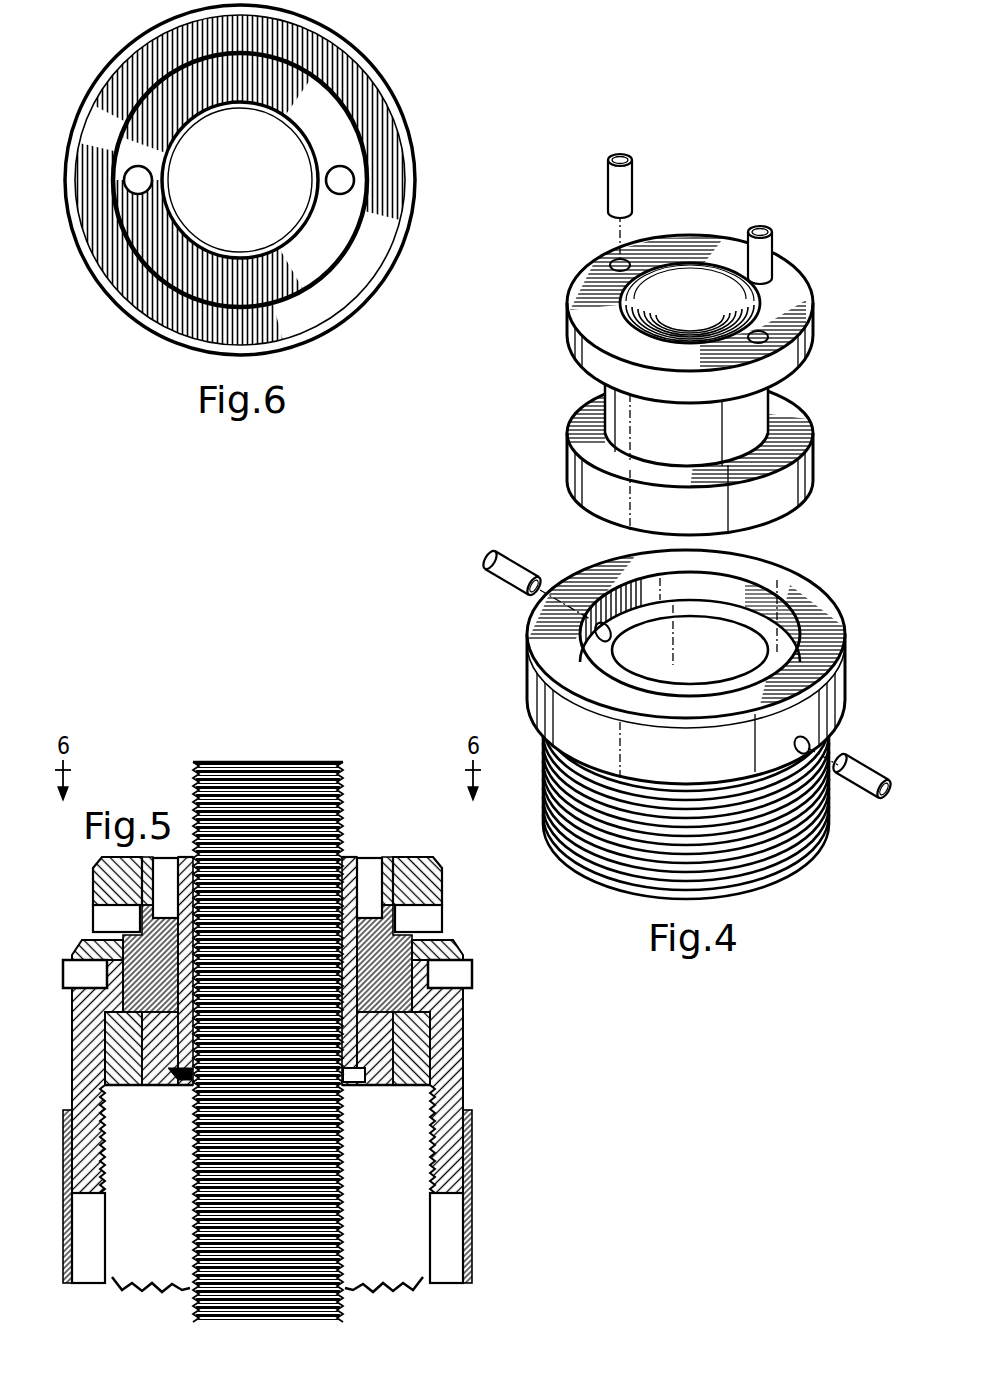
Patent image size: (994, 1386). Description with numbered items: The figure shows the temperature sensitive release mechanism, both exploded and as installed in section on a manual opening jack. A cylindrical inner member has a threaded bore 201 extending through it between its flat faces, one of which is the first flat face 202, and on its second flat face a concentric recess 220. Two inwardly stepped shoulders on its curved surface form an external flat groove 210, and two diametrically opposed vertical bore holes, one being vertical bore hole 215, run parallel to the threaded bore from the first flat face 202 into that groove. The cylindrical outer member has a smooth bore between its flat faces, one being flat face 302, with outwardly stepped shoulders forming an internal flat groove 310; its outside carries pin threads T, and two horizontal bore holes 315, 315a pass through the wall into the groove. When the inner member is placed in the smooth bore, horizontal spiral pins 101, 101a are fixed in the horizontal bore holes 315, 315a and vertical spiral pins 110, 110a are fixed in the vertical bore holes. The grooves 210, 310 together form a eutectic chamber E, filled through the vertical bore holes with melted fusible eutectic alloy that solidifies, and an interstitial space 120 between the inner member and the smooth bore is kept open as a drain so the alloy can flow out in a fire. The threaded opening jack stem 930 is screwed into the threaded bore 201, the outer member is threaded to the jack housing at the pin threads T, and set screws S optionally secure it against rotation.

In FIG. 4, the horizontal spiral pin 101 is at (846, 794).
In FIG. 4, the horizontal spiral pin 101a is at (495, 590).
In FIG. 6, the vertical spiral pin 110 is at (336, 176).
In FIG. 4, the vertical spiral pin 110 is at (772, 252).
In FIG. 5, the vertical spiral pin 110 is at (370, 875).
In FIG. 4, the vertical spiral pin 110a is at (632, 182).
In FIG. 6, the interstitial space 120 is at (135, 247).
In FIG. 5, the interstitial space 120 is at (108, 1032).
In FIG. 6, the threaded bore 201 is at (284, 124).
In FIG. 6, the first flat face 202 is at (340, 213).
In FIG. 4, the external flat groove 210 is at (778, 398).
In FIG. 6, the vertical bore hole 215 is at (334, 192).
In FIG. 4, the vertical bore hole 215 is at (790, 343).
In FIG. 5, the recess 220 is at (183, 1088).
In FIG. 6, the flat face 302 is at (350, 278).
In FIG. 4, the internal flat groove 310 is at (768, 626).
In FIG. 4, the horizontal bore hole 315 is at (810, 743).
In FIG. 4, the horizontal bore hole 315a is at (613, 633).
In FIG. 5, the threaded opening jack stem 930 is at (350, 795).
In FIG. 5, the set screw S is at (474, 977).
In FIG. 5, the eutectic chamber E is at (428, 1010).
In FIG. 5, the pin threads T is at (430, 1050).